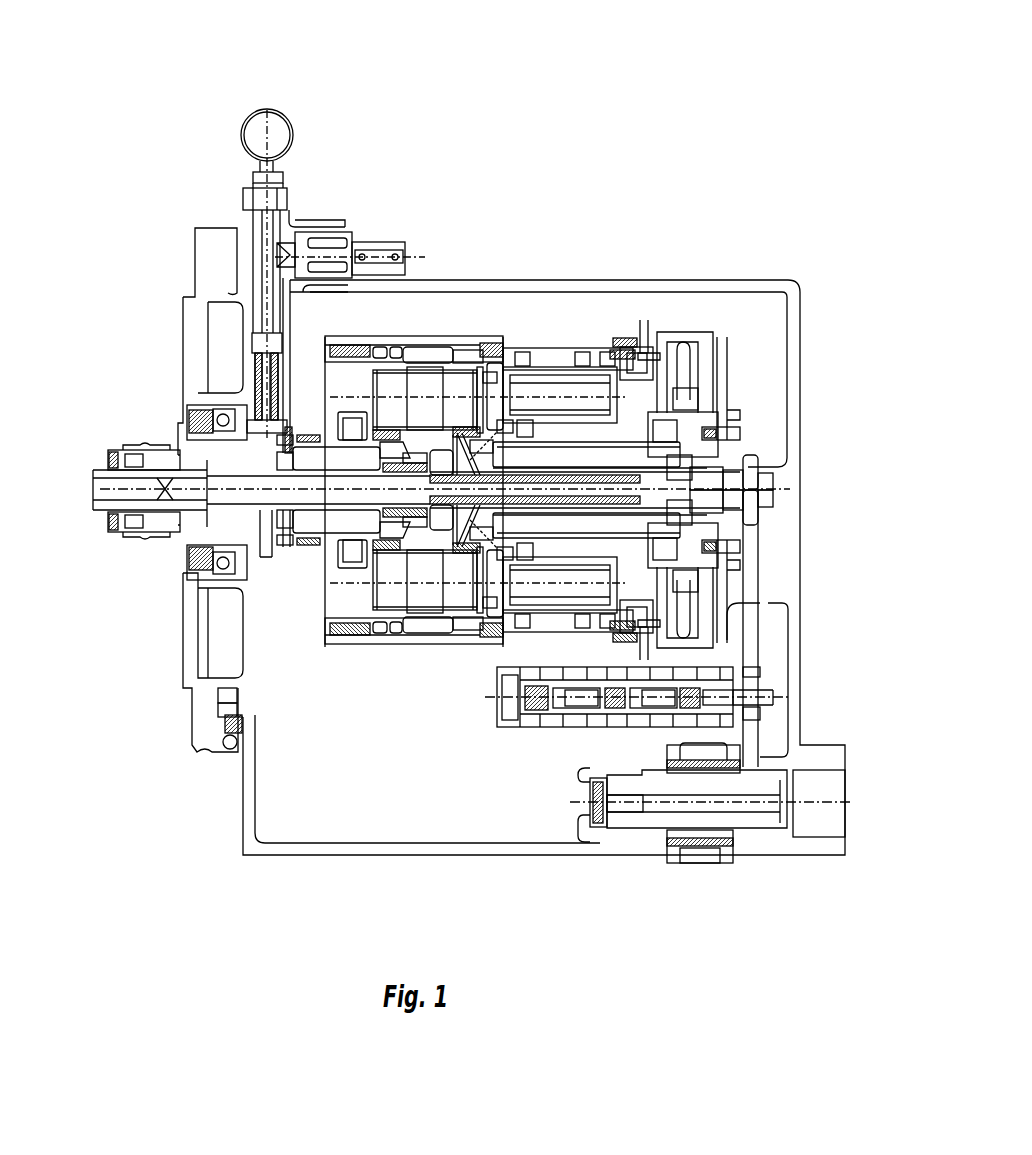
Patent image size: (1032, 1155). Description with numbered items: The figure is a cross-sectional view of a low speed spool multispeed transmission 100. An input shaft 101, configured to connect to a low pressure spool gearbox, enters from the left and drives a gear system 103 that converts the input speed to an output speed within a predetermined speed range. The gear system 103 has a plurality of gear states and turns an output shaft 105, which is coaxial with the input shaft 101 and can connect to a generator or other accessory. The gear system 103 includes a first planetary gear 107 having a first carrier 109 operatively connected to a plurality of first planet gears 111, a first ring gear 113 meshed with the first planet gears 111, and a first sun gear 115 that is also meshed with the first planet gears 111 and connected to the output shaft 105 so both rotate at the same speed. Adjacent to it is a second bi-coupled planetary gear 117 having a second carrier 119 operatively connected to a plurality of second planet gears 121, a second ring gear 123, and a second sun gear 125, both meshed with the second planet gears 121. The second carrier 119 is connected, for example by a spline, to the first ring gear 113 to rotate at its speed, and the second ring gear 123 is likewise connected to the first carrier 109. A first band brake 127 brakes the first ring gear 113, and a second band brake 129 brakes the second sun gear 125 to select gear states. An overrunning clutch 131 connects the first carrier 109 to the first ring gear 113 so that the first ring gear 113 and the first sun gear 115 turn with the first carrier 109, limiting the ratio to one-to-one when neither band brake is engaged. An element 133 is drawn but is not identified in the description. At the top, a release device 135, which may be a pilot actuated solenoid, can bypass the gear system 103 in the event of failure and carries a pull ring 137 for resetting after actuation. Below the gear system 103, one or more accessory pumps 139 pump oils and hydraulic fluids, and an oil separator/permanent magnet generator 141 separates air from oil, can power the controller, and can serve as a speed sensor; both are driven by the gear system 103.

The multispeed transmission 100 is at (453, 186).
The input shaft 101 is at (120, 447).
The gear system 103 is at (363, 316).
The output shaft 105 is at (168, 480).
The first planetary gear 107 is at (463, 387).
The first carrier 109 is at (327, 532).
The first planet gears 111 is at (375, 370).
The first ring gear 113 is at (433, 345).
The first sun gear 115 is at (338, 432).
The second bi-coupled planetary gear 117 is at (617, 397).
The second carrier 119 is at (627, 373).
The second planet gears 121 is at (593, 370).
The second ring gear 123 is at (567, 363).
The second sun gear 125 is at (687, 385).
The first band brake 127 is at (393, 333).
The second band brake 129 is at (698, 327).
The overrunning clutch 131 is at (322, 348).
The connector 133 is at (350, 251).
The release device 135 is at (265, 228).
The pull ring 137 is at (289, 106).
The accessory pumps 139 is at (775, 696).
The oil separator/permanent magnet generator 141 is at (793, 800).